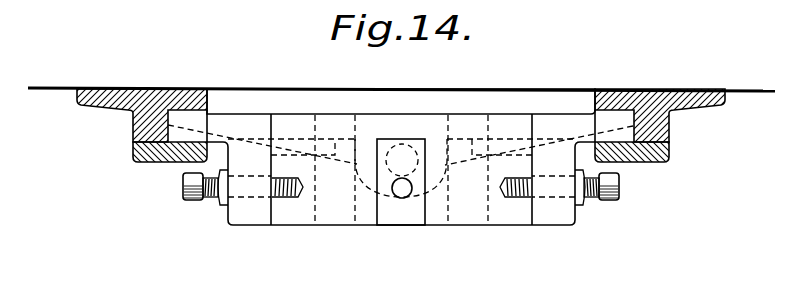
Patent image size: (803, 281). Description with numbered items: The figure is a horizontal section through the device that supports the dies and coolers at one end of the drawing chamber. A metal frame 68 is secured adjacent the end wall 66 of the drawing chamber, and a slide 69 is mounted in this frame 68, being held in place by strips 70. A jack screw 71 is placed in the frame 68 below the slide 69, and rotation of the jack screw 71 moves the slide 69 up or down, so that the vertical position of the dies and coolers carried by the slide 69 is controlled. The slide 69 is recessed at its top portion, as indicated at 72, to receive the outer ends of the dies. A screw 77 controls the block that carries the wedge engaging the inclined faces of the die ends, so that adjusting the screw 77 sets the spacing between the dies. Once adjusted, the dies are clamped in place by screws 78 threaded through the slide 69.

The end wall 66 is at (755, 93).
The metal frame 68 is at (112, 108).
The slide 69 is at (252, 218).
The strips 70 is at (138, 160).
The jack screw 71 is at (403, 152).
The recess 72 is at (306, 217).
The screw 77 is at (401, 198).
The clamping screws 78 is at (213, 201).